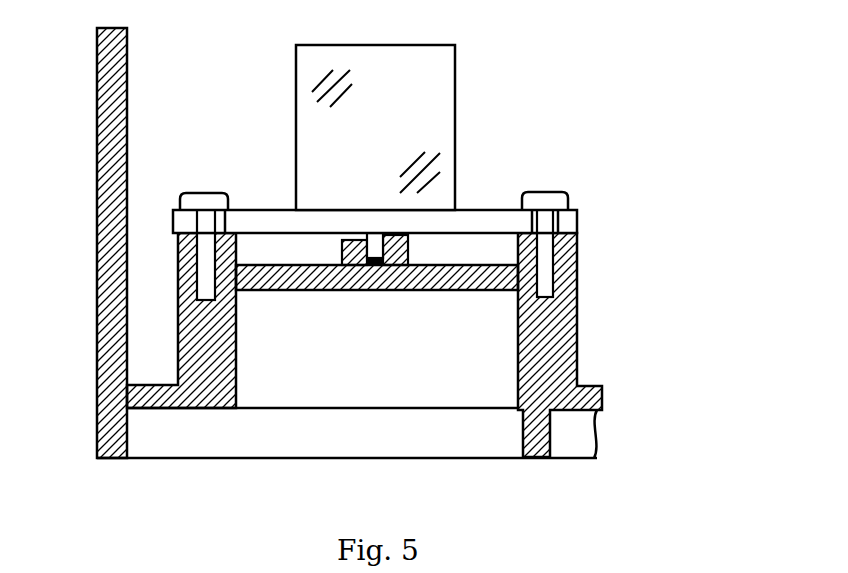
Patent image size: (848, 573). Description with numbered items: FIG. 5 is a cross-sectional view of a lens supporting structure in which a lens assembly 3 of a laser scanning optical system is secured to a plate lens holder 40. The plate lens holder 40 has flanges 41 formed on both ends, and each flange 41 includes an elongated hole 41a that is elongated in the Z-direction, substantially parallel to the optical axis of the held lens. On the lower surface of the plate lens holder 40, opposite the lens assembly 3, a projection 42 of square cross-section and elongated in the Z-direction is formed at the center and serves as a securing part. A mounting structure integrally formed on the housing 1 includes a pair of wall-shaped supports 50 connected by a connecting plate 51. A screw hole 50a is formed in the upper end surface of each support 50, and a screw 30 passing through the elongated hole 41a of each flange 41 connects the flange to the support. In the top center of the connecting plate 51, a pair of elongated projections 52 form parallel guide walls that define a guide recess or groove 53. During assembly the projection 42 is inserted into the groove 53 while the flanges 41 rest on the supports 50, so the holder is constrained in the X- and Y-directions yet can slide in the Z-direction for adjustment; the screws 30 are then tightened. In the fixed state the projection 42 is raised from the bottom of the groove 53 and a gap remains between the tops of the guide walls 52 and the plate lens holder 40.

The housing 1 is at (97, 137).
The lens assembly 3 is at (455, 102).
The screw 30 is at (196, 193).
The plate lens holder 40 is at (478, 208).
The flange 41 is at (173, 216).
The elongated hole 41a is at (220, 197).
The projection 42 is at (383, 290).
The support 50 is at (178, 344).
The screw hole 50a is at (178, 257).
The connecting plate 51 is at (270, 290).
The projections (guide walls) 52 is at (337, 290).
The guide recess or groove 53 is at (370, 255).